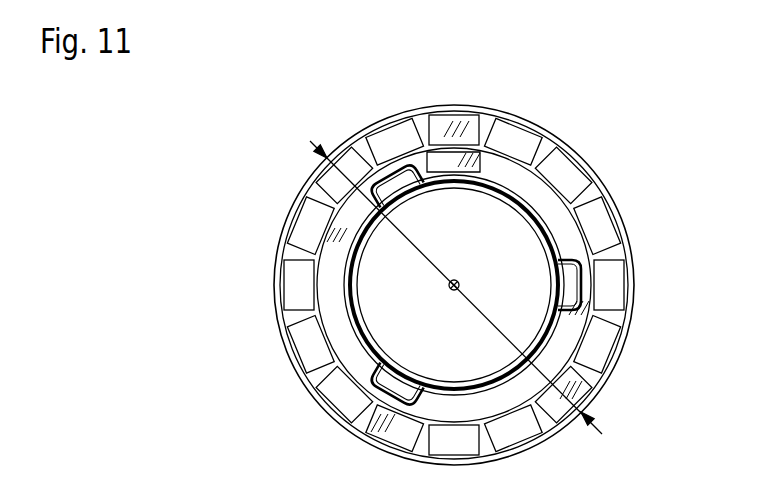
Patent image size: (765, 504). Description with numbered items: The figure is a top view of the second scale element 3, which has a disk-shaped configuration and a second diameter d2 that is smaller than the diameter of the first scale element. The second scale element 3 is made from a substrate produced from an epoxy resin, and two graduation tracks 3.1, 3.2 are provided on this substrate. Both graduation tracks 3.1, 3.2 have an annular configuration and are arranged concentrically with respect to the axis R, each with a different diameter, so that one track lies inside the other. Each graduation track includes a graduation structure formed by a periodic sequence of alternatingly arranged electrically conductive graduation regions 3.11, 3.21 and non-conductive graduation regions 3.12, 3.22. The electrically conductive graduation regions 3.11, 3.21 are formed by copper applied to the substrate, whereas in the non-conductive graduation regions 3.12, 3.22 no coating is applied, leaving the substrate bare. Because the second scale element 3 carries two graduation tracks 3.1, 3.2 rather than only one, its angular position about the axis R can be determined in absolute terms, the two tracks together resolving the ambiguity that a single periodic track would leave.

The second scale element 3 is at (288, 212).
The graduation track 3.1 is at (447, 157).
The electrically conductive graduation region 3.11 is at (537, 186).
The non-conductive graduation region 3.12 is at (565, 262).
The graduation track 3.2 is at (303, 283).
The electrically conductive graduation region 3.21 is at (310, 350).
The non-conductive graduation region 3.22 is at (320, 379).
The second diameter d2 is at (456, 273).
The axis R is at (450, 286).